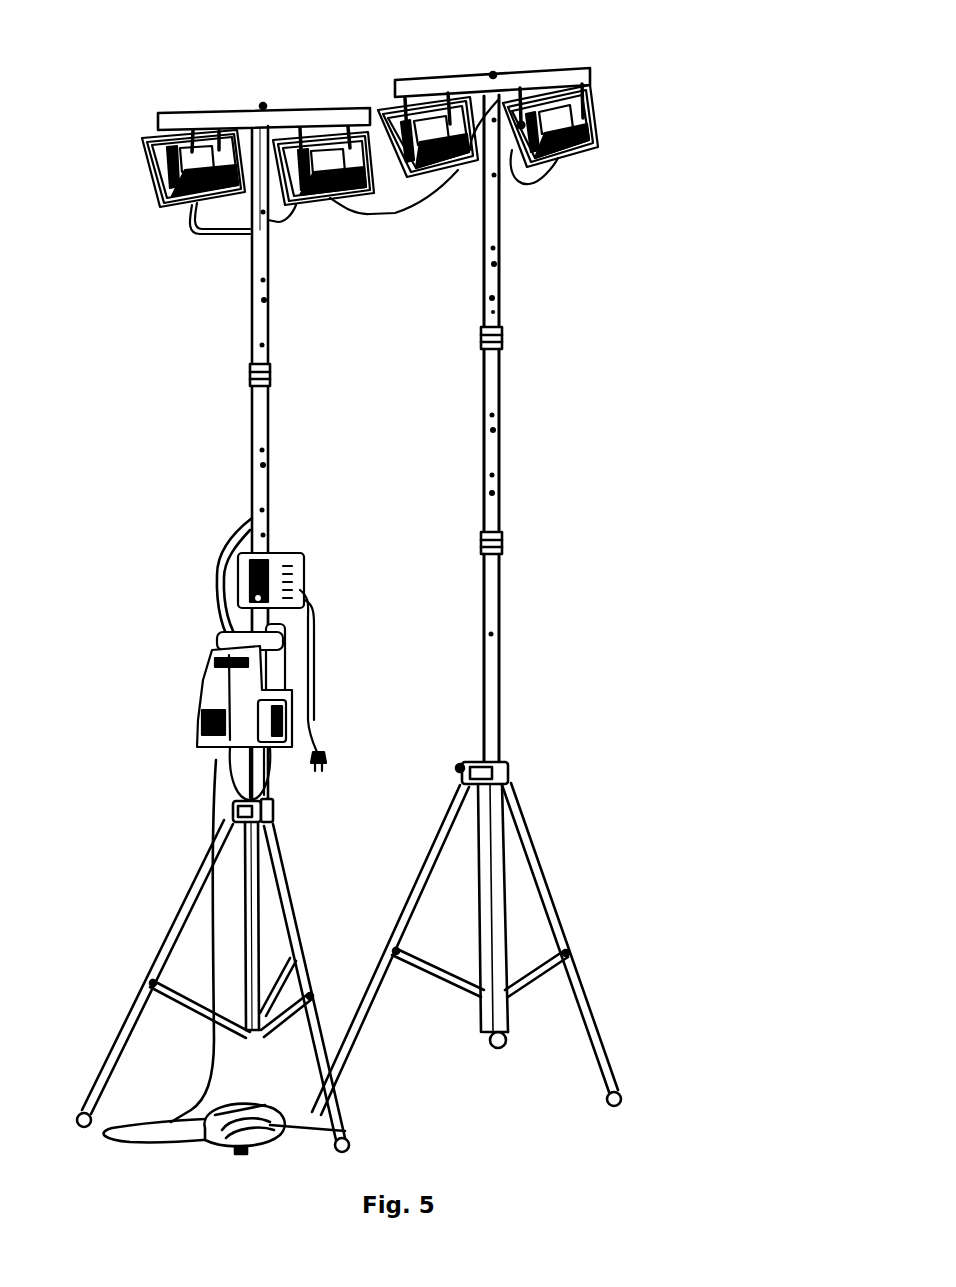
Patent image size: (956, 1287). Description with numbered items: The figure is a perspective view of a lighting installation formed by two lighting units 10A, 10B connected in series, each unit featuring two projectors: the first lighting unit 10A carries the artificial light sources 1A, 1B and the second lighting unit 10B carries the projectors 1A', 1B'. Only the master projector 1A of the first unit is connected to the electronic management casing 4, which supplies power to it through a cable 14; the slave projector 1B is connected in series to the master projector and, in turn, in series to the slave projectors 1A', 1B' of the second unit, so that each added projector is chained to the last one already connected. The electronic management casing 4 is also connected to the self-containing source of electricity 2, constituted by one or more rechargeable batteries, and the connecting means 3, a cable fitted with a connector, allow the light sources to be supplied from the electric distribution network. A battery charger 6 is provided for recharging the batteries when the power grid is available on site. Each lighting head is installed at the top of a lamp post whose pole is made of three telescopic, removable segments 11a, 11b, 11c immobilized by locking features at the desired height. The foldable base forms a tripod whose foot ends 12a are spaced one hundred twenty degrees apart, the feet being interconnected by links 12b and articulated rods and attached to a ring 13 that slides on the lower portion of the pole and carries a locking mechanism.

The artificial light source 1A is at (196, 127).
The artificial light source 1B is at (363, 121).
The projector 1A' is at (428, 99).
The projector 1B' is at (534, 102).
The lighting unit 10A is at (124, 176).
The lighting unit 10B is at (620, 140).
The pole segment 11a is at (497, 299).
The pole segment 11b is at (497, 493).
The pole segment 11c is at (497, 637).
The foot end 12a is at (614, 1100).
The link 12b is at (399, 955).
The ring 13 is at (506, 770).
The cable 14 is at (227, 550).
The self-containing source of electricity 2 is at (217, 677).
The connecting means 3 is at (311, 723).
The electronic management casing 4 is at (283, 557).
The battery charger 6 is at (207, 1112).